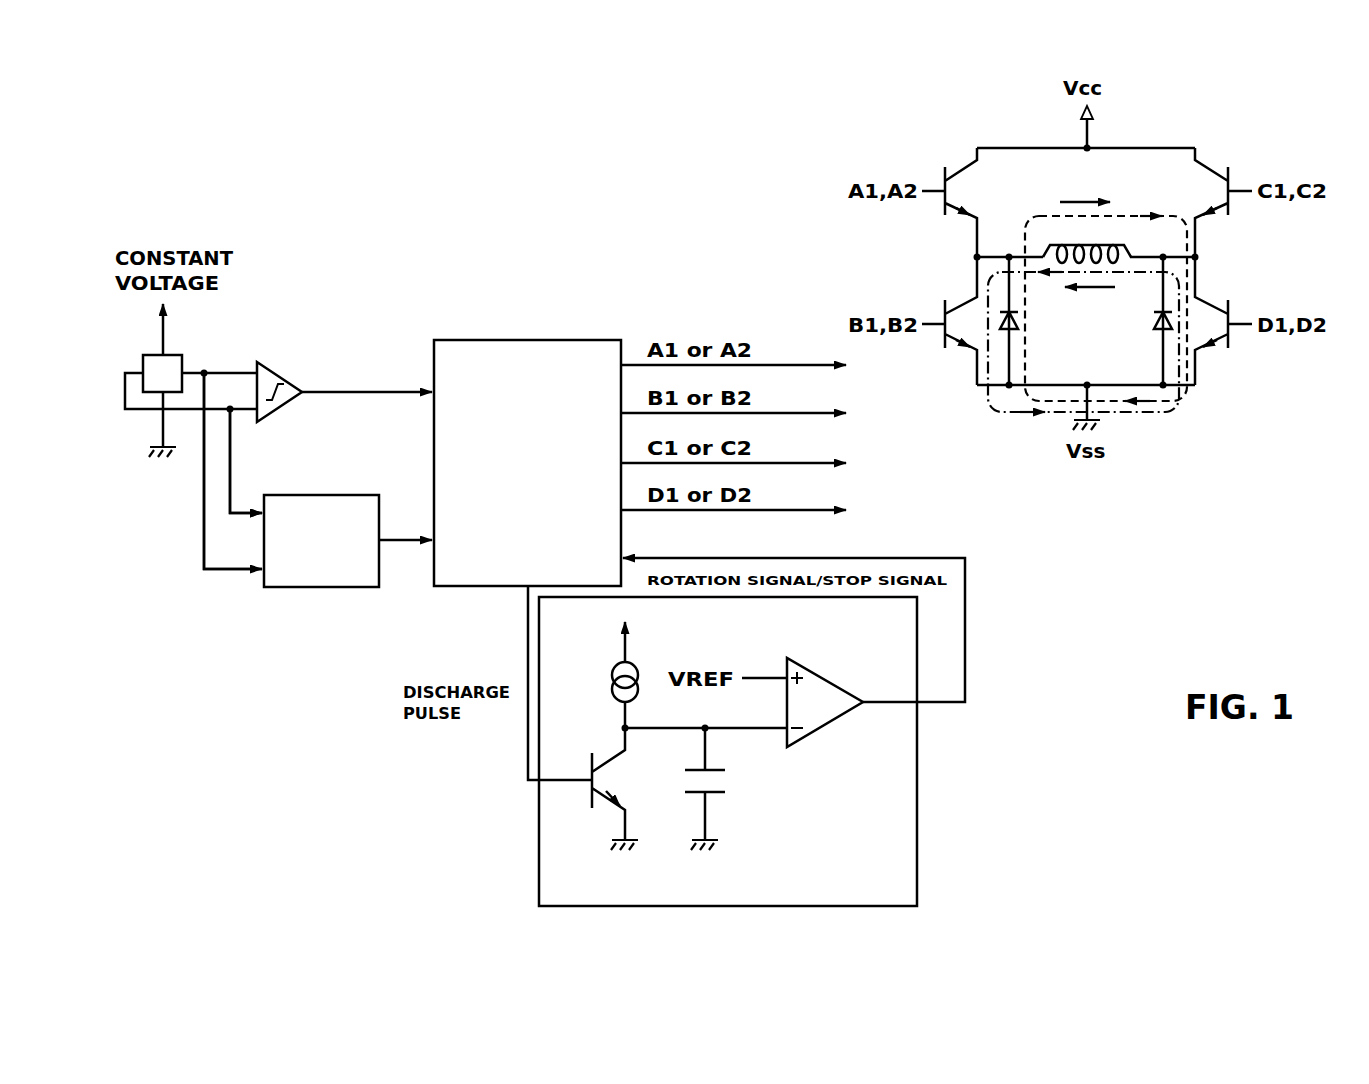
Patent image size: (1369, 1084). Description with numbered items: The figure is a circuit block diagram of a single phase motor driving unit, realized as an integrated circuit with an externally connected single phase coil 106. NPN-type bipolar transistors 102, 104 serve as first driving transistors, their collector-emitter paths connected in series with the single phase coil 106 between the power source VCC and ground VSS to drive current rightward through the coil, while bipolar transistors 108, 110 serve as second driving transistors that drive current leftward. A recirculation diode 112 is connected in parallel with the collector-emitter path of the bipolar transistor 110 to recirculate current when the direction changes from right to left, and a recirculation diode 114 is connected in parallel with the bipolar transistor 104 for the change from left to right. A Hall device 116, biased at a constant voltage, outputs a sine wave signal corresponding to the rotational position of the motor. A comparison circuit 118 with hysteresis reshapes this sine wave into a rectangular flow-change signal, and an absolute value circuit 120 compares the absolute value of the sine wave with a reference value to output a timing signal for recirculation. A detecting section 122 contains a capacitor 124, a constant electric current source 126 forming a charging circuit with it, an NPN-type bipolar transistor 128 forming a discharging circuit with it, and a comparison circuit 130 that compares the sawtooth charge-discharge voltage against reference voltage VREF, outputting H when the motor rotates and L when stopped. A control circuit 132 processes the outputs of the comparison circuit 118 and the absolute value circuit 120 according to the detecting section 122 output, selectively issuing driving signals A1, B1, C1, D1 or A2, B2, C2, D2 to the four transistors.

The bipolar transistor 102 is at (958, 160).
The bipolar transistor 104 is at (1215, 350).
The single phase coil 106 is at (1105, 245).
The bipolar transistor 108 is at (1205, 162).
The bipolar transistor 110 is at (955, 352).
The recirculation diode 112 is at (1013, 322).
The recirculation diode 114 is at (1160, 332).
The Hall device 116 is at (150, 355).
The comparison circuit 118 is at (268, 366).
The absolute value circuit 120 is at (318, 587).
The detecting section 122 is at (917, 855).
The capacitor 124 is at (730, 782).
The constant electric current source 126 is at (607, 680).
The bipolar transistor 128 is at (600, 812).
The comparison circuit 130 is at (820, 674).
The control circuit 132 is at (500, 340).